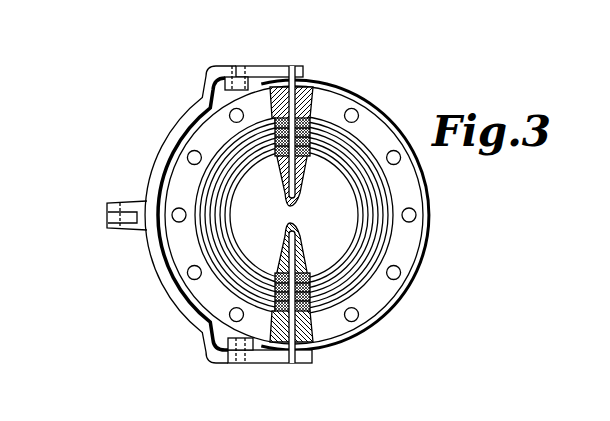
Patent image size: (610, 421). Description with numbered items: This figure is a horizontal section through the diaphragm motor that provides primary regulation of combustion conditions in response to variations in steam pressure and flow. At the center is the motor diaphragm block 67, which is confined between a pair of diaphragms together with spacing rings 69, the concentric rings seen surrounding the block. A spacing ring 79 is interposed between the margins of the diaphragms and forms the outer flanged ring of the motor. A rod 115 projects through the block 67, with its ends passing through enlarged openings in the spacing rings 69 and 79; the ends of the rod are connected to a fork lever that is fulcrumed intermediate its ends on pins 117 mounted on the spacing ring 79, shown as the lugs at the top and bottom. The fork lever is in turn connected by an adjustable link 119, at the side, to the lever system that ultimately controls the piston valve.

The block 67 is at (343, 197).
The spacing rings 69 is at (380, 244).
The spacing ring 79 is at (375, 122).
The rod 115 is at (304, 82).
The pins 117 is at (235, 64).
The adjustable link 119 is at (107, 215).